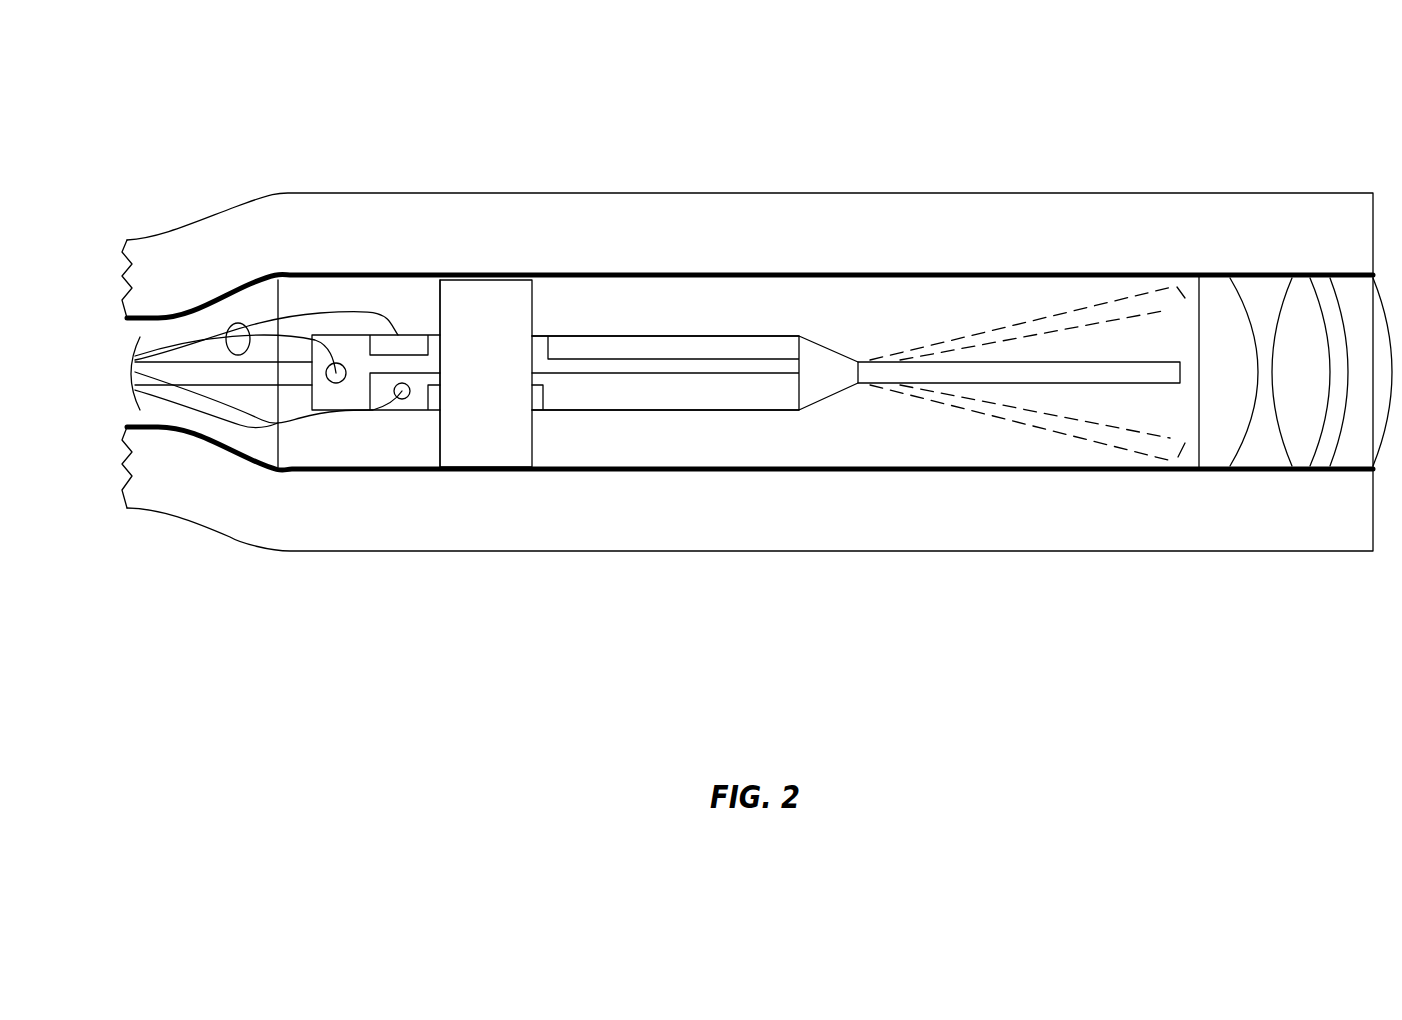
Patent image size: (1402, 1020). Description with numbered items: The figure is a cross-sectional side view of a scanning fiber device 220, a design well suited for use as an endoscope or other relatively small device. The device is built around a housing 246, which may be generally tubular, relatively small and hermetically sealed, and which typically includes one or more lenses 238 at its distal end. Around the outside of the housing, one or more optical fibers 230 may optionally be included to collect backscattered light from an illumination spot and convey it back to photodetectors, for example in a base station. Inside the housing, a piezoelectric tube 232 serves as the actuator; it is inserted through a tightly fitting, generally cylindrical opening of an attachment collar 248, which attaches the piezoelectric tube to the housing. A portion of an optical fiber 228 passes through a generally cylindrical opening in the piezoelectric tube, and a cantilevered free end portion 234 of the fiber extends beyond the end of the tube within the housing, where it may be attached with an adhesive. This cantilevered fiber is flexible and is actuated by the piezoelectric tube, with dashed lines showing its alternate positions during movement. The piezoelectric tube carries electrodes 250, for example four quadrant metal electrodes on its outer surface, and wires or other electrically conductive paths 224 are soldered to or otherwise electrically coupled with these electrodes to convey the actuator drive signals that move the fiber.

The scanning fiber device 220 is at (250, 102).
The electrically conductive paths 224 is at (231, 325).
The optical fiber 228 is at (252, 385).
The optical fibers 230 is at (1147, 193).
The piezoelectric tube 232 is at (609, 314).
The cantilevered free end portion 234 is at (1102, 383).
The lenses 238 is at (1352, 290).
The housing 246 is at (385, 273).
The attachment collar 248 is at (490, 278).
The electrodes 250 is at (722, 335).